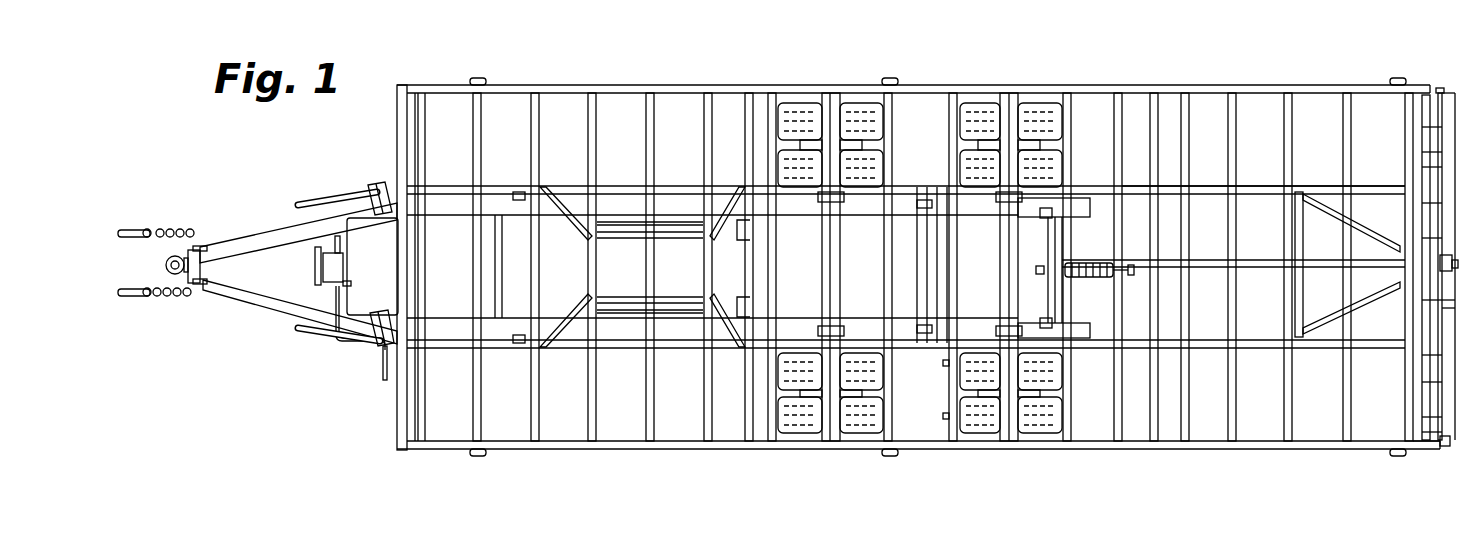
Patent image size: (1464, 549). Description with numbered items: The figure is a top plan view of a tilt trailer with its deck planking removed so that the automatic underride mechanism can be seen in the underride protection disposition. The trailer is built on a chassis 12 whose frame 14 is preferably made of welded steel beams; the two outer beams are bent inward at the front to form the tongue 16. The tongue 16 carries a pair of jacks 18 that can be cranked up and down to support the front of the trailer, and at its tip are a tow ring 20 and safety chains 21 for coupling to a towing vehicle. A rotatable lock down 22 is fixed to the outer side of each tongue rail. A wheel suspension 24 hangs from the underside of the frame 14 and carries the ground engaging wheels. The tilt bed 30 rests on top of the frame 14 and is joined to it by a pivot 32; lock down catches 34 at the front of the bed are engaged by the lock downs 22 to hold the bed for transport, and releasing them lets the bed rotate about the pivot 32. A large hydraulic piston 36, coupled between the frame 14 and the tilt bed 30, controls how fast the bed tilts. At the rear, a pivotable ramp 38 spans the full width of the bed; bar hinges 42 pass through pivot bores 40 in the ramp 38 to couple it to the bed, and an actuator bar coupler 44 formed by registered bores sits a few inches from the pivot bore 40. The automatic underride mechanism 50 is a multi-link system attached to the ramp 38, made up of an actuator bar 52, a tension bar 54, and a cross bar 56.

The chassis 12 is at (457, 316).
The frame 14 is at (513, 207).
The tongue 16 is at (258, 228).
The jacks 18 is at (316, 250).
The tow ring 20 is at (180, 294).
The safety chains 21 is at (150, 230).
The rotatable lock down 22 is at (352, 186).
The wheel suspension 24 is at (923, 187).
The tilt bed 30 is at (642, 87).
The pivot 32 is at (946, 345).
The lock down catches 34 is at (392, 180).
The hydraulic piston 36 is at (683, 222).
The pivotable ramp 38 is at (1452, 325).
The pivot bores 40 is at (1445, 452).
The bar hinges 42 is at (1442, 112).
The actuator bar coupler 44 is at (1430, 262).
The automatic underride mechanism 50 is at (1210, 242).
The actuator bar 52 is at (1257, 262).
The tension bar 54 is at (1097, 277).
The cross bar 56 is at (1052, 240).